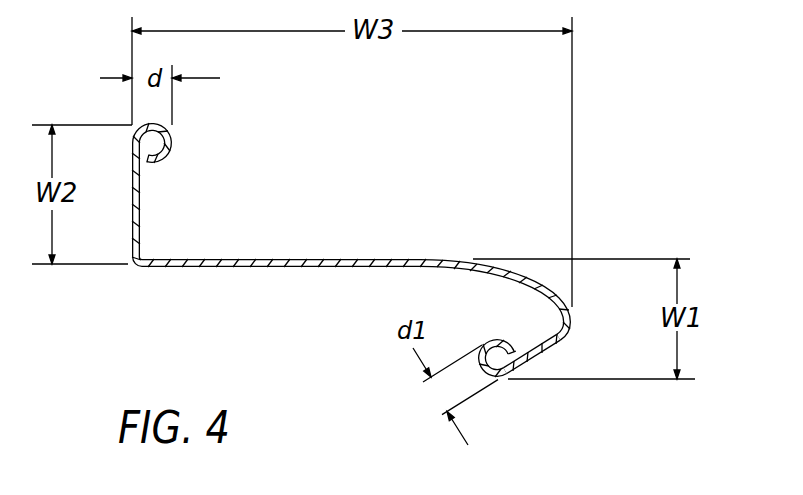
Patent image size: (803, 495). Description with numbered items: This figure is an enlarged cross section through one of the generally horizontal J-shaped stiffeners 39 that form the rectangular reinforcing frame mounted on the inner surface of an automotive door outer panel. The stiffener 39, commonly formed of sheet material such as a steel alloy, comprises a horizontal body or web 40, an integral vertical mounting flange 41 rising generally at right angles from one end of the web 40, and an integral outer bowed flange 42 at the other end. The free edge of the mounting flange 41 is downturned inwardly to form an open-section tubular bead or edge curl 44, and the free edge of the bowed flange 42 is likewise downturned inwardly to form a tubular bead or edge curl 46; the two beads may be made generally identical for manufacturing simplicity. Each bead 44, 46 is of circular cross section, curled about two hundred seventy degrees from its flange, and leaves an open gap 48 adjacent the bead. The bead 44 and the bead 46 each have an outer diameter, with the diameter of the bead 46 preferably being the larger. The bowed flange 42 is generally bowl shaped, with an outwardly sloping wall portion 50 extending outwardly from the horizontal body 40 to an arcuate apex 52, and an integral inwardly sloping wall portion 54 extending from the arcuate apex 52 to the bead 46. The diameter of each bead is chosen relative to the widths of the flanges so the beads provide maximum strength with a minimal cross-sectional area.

The stiffener 39 is at (343, 276).
The horizontal body or web 40 is at (277, 267).
The vertical mounting flange 41 is at (130, 232).
The outer bowed flange 42 is at (529, 313).
The tubular bead or edge curl 44 is at (172, 132).
The tubular bead or edge curl 46 is at (483, 370).
The open gap 48 is at (145, 158).
The outwardly sloping wall portion 50 is at (518, 270).
The arcuate apex 52 is at (570, 323).
The inwardly sloping wall portion 54 is at (540, 360).